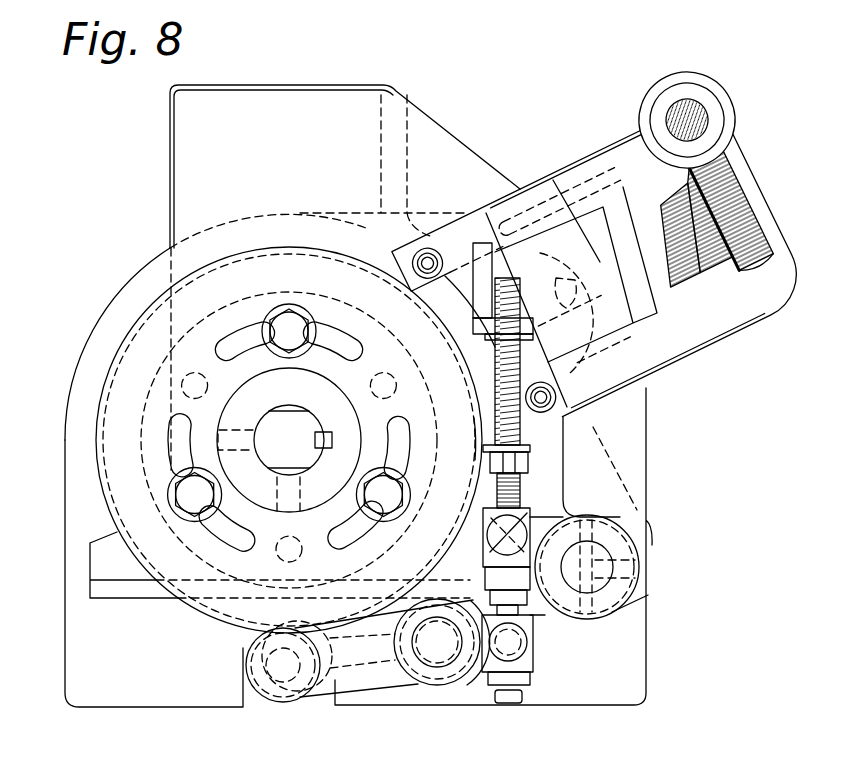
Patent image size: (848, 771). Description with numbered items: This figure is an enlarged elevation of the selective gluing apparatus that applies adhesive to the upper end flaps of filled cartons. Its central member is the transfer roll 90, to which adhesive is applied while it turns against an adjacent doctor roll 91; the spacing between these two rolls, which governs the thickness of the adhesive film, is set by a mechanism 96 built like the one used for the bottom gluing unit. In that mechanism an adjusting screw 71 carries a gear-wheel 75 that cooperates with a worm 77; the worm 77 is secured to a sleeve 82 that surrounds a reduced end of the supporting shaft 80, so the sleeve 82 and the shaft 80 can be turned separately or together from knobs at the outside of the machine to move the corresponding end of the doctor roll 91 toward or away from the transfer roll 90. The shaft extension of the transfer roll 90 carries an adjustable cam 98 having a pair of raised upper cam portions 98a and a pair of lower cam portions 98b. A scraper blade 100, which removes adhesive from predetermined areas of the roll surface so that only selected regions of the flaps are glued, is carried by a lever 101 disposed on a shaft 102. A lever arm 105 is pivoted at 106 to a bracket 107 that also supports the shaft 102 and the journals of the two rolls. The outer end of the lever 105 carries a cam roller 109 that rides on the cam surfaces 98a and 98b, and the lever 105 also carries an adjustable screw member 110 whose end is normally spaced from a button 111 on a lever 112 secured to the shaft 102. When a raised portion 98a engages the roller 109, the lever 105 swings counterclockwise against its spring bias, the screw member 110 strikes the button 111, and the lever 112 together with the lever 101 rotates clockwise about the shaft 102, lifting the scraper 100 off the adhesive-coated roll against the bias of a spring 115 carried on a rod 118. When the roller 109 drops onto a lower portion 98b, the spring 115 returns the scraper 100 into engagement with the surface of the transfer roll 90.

The adjusting screw 71 is at (748, 197).
The gear-wheel 75 is at (768, 243).
The worm 77 is at (725, 98).
The supporting shaft 80 is at (668, 112).
The sleeve 82 is at (690, 101).
The transfer roll 90 is at (100, 403).
The doctor roll 91 is at (542, 256).
The spacing control mechanism 96 is at (594, 326).
The adjustable cam 98 is at (167, 317).
The upper cam portions 98a is at (112, 357).
The lower cam portions 98b is at (318, 258).
The scraper blade 100 is at (475, 452).
The lever 101 is at (556, 502).
The shaft 102 is at (603, 555).
The lever arm 105 is at (368, 677).
The pivot 106 is at (437, 655).
The bracket 107 is at (90, 560).
The cam roller 109 is at (272, 697).
The adjustable screw member 110 is at (522, 700).
The button 111 is at (530, 615).
The lever 112 is at (608, 600).
The spring 115 is at (497, 391).
The rod 118 is at (520, 483).